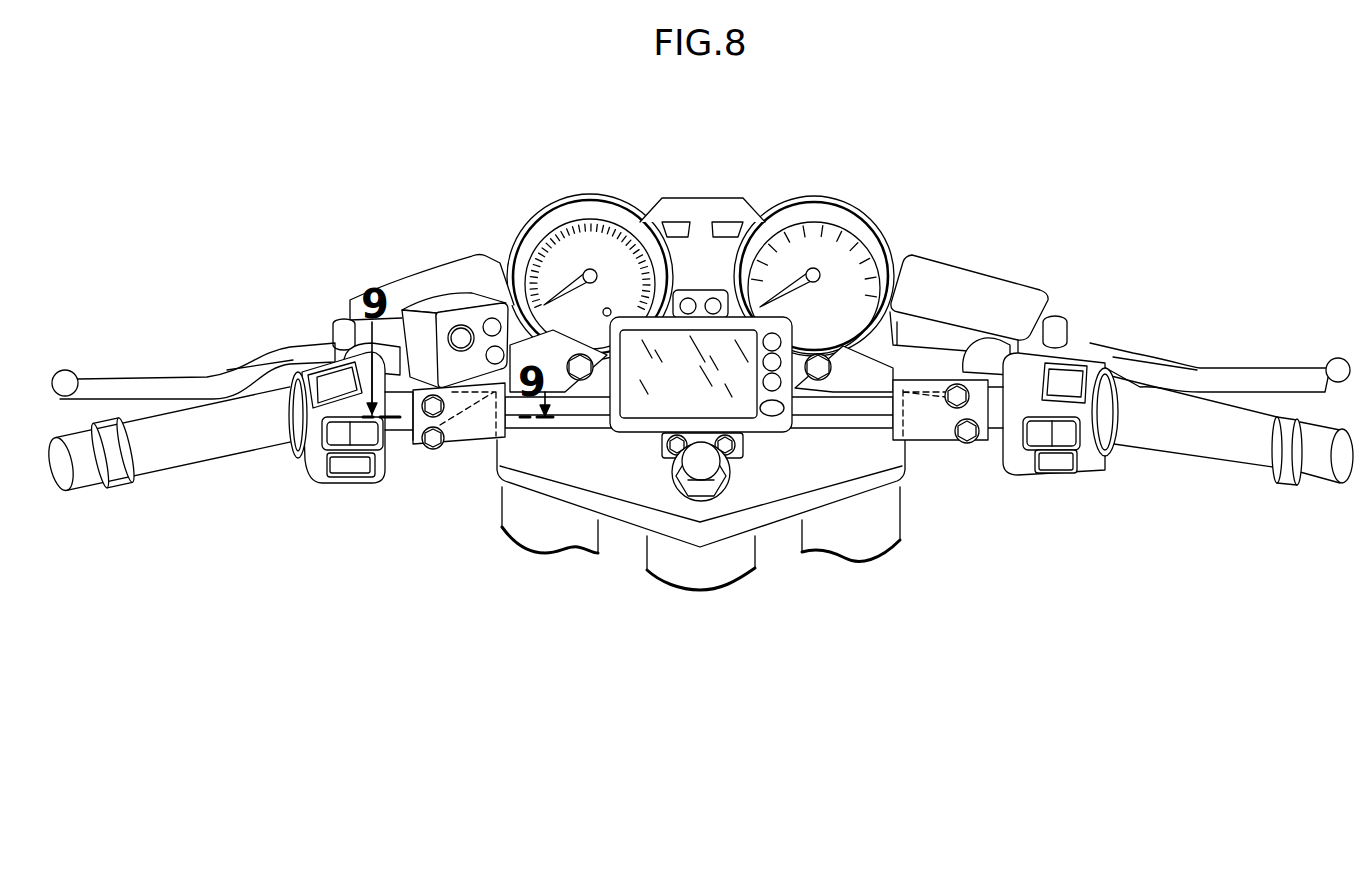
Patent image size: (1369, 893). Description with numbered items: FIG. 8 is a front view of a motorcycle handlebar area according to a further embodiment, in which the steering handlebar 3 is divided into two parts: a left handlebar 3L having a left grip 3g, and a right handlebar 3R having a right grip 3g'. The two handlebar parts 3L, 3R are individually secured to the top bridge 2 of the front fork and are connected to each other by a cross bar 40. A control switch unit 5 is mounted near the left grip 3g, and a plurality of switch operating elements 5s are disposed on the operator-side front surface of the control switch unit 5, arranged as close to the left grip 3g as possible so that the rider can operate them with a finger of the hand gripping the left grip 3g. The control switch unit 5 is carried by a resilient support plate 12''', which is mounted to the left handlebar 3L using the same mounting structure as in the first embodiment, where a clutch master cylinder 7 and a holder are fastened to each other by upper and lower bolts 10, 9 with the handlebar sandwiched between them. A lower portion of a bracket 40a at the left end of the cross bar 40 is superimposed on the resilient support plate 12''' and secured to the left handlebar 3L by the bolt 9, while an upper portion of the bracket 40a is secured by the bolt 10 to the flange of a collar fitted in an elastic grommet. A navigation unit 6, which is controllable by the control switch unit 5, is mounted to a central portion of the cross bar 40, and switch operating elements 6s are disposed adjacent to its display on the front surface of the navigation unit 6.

The top bridge 2 is at (750, 487).
The steering handlebar 3 is at (855, 141).
The left handlebar 3L is at (547, 330).
The right handlebar 3R is at (850, 330).
The left grip 3g is at (214, 446).
The right grip 3g' is at (1178, 436).
The control switch unit 5 is at (445, 299).
The switch operating elements 5s is at (460, 337).
The navigation unit 6 is at (662, 387).
The switch operating elements 6s is at (773, 384).
The clutch master cylinder 7 is at (398, 282).
The bolt 9 is at (443, 450).
The bolt 10 is at (428, 446).
The resilient support plate 12''' is at (382, 453).
The cross bar 40 is at (840, 416).
The bracket 40a is at (467, 425).